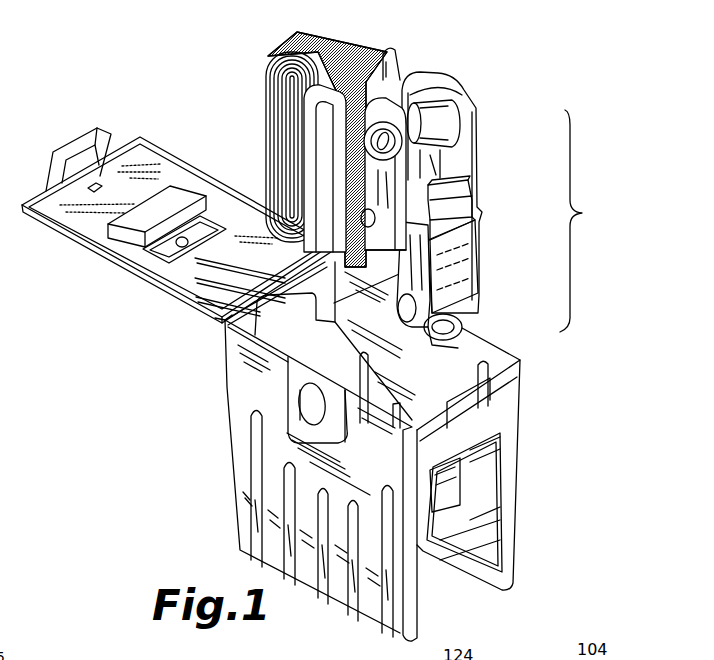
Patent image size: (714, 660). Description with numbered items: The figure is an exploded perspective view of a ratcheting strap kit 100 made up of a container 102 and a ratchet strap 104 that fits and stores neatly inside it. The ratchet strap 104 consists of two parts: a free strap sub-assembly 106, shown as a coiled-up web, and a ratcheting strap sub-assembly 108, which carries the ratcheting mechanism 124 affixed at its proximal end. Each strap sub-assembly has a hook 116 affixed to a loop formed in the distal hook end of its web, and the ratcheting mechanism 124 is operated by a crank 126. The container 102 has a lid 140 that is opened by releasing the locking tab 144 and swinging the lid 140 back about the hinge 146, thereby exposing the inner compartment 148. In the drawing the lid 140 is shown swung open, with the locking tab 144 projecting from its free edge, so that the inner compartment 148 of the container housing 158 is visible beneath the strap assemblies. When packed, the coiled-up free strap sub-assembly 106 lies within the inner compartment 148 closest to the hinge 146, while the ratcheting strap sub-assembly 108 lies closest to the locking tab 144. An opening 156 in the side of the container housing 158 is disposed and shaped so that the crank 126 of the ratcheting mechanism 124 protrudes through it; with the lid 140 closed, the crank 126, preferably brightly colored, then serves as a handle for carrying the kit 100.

The kit 100 is at (582, 213).
The container 102 is at (520, 418).
The ratchet strap 104 is at (423, 181).
The free strap sub-assembly 106 is at (293, 35).
The ratcheting strap sub-assembly 108 is at (477, 152).
The hook 116 is at (397, 70).
The ratcheting mechanism 124 is at (481, 218).
The crank 126 is at (478, 302).
The lid 140 is at (140, 283).
The locking tab 144 is at (80, 134).
The hinge 146 is at (230, 339).
The inner compartment 148 is at (466, 353).
The opening 156 is at (475, 476).
The container housing 158 is at (235, 451).